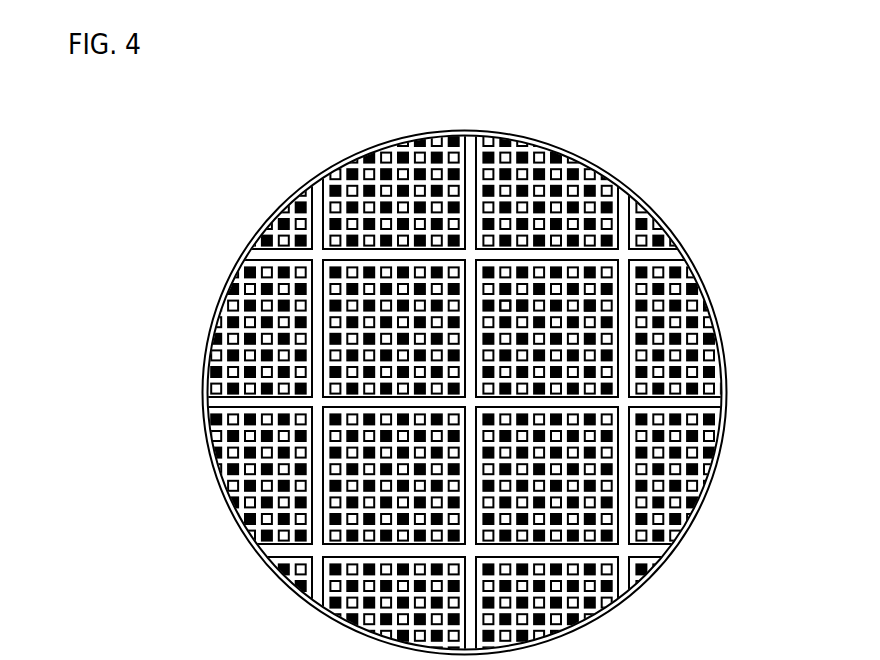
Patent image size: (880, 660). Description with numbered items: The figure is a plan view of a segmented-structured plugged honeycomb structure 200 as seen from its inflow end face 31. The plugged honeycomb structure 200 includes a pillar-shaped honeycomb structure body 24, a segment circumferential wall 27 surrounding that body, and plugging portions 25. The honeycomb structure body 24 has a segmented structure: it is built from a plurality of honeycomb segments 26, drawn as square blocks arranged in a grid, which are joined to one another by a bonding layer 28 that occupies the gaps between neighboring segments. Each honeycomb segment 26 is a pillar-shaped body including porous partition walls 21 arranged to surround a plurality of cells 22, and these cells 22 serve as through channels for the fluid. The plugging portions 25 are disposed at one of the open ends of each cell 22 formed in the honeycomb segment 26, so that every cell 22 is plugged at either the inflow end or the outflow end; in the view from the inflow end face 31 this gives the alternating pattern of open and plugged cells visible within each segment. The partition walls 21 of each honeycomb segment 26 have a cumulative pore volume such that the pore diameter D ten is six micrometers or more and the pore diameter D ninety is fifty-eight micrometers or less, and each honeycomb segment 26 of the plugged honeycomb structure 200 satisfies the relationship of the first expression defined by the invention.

The plugged honeycomb structure 200 is at (743, 40).
The honeycomb structure body 24 is at (715, 468).
The inflow end face 31 is at (308, 158).
The honeycomb segment 26 is at (608, 335).
The bonding layer 28 is at (615, 373).
The segment circumferential wall 27 is at (678, 250).
The cell 22 is at (497, 297).
The partition wall 21 is at (522, 298).
The plugging portion 25 is at (583, 297).